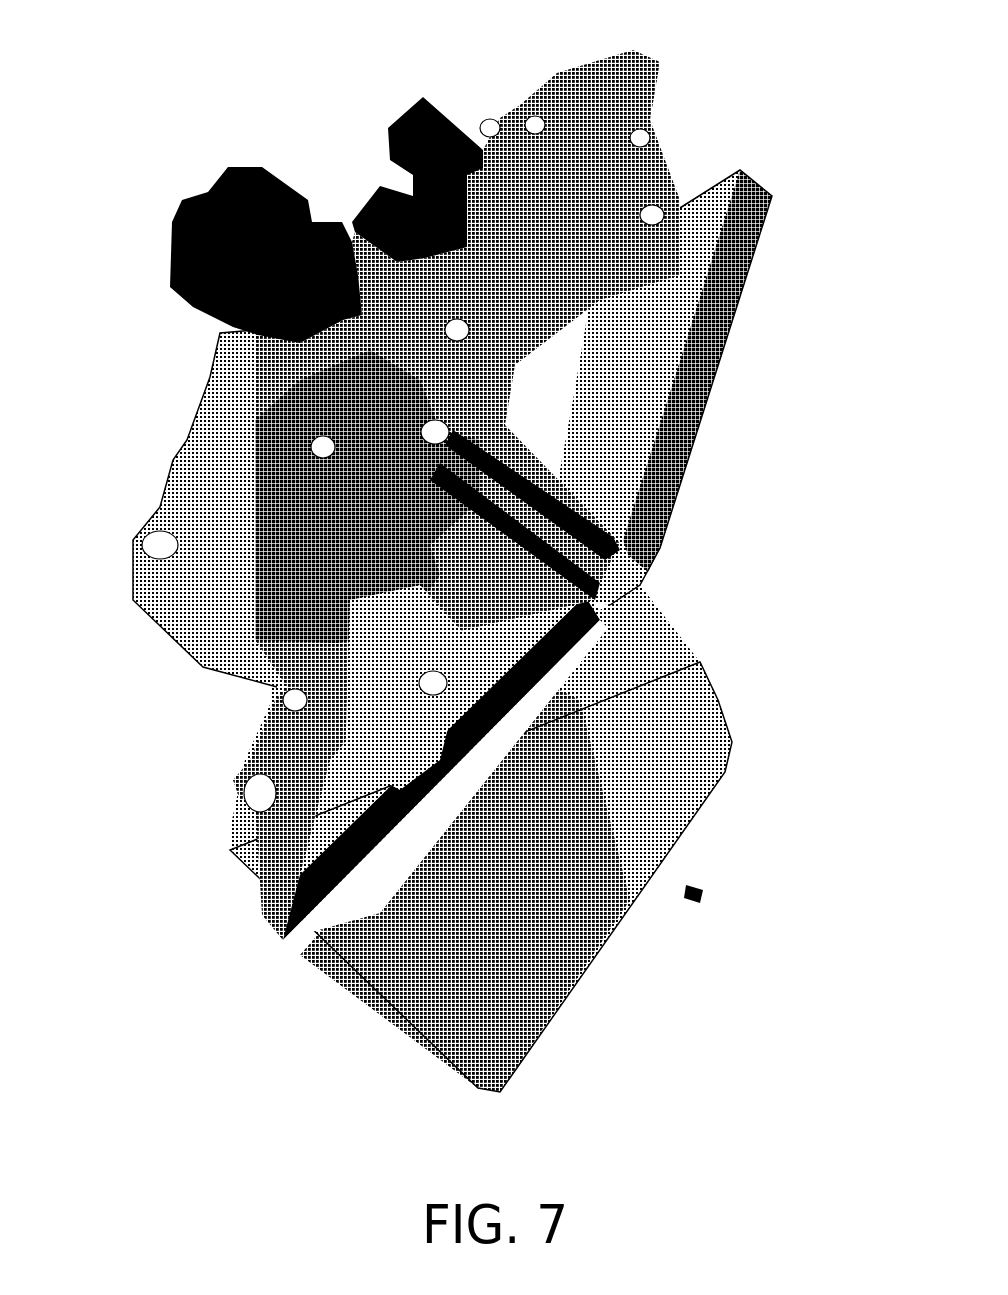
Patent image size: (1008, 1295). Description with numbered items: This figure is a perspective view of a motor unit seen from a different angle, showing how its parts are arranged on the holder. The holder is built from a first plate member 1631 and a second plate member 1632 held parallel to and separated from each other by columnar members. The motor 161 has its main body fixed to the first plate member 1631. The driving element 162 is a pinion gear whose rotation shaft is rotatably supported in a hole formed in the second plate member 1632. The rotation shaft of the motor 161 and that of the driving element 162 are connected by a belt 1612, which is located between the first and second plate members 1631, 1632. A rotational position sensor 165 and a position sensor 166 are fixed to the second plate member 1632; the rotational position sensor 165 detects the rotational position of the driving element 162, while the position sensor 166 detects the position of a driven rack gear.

The motor 161 is at (568, 922).
The driving element 162 is at (258, 186).
The rotational position sensor 165 is at (278, 400).
The position sensor 166 is at (458, 124).
The belt 1612 is at (420, 607).
The first plate member 1631 is at (640, 412).
The second plate member 1632 is at (193, 480).